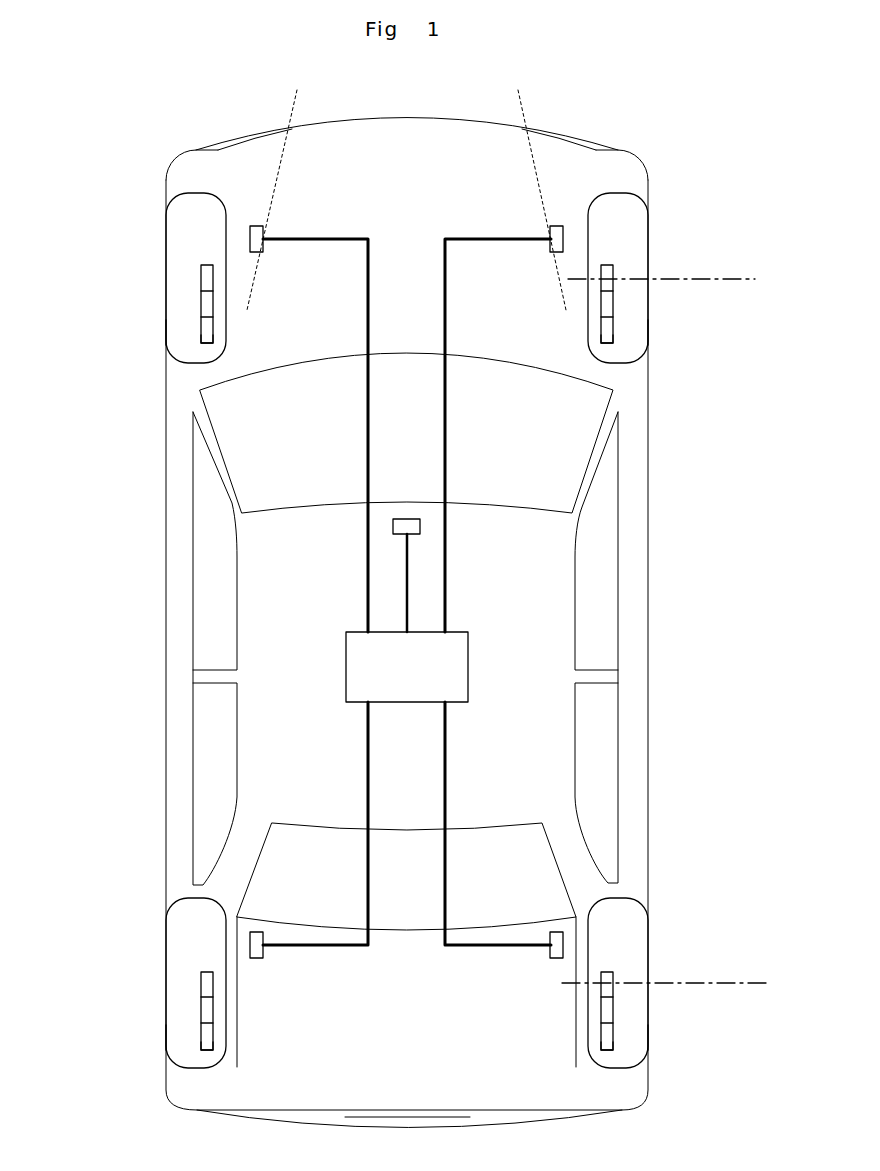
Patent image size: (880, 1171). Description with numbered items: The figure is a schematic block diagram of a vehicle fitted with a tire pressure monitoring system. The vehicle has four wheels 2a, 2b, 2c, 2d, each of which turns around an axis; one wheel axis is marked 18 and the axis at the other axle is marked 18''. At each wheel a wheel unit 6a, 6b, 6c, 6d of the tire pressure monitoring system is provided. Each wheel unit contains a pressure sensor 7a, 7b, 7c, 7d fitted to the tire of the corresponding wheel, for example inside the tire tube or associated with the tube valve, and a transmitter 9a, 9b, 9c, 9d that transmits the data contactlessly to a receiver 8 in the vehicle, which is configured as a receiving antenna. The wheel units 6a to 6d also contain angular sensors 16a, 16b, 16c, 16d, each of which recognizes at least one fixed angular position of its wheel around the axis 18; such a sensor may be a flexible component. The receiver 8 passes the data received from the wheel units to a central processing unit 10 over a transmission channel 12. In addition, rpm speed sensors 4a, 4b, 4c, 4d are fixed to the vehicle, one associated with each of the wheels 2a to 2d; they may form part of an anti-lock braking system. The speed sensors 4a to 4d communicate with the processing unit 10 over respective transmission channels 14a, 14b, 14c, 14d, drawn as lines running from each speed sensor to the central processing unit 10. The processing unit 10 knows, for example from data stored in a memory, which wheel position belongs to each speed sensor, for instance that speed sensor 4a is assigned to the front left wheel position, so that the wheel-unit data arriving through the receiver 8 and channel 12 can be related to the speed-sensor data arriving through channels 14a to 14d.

The wheel 2a is at (178, 210).
The wheel 2b is at (178, 915).
The wheel 2c is at (636, 210).
The wheel 2d is at (636, 915).
The speed sensor 4a is at (262, 237).
The speed sensor 4b is at (254, 955).
The speed sensor 4c is at (552, 237).
The speed sensor 4d is at (560, 955).
The wheel unit 6a is at (186, 333).
The wheel unit 6b is at (186, 1037).
The wheel unit 6c is at (628, 333).
The wheel unit 6d is at (628, 1037).
The pressure sensor 7a is at (207, 340).
The pressure sensor 7b is at (207, 1047).
The pressure sensor 7c is at (607, 340).
The pressure sensor 7d is at (607, 1047).
The receiver 8 is at (398, 526).
The transmitter 9a is at (207, 265).
The transmitter 9b is at (207, 972).
The transmitter 9c is at (607, 265).
The transmitter 9d is at (607, 972).
The central processing unit 10 is at (357, 677).
The transmission channel 12 is at (407, 575).
The transmission channel 14a is at (320, 240).
The transmission channel 14b is at (320, 947).
The transmission channel 14c is at (494, 240).
The transmission channel 14d is at (494, 947).
The angular sensor 16a is at (205, 302).
The angular sensor 16b is at (205, 1008).
The angular sensor 16c is at (609, 302).
The angular sensor 16d is at (609, 1008).
The axis 18 is at (672, 941).
The axis 18'' is at (689, 238).